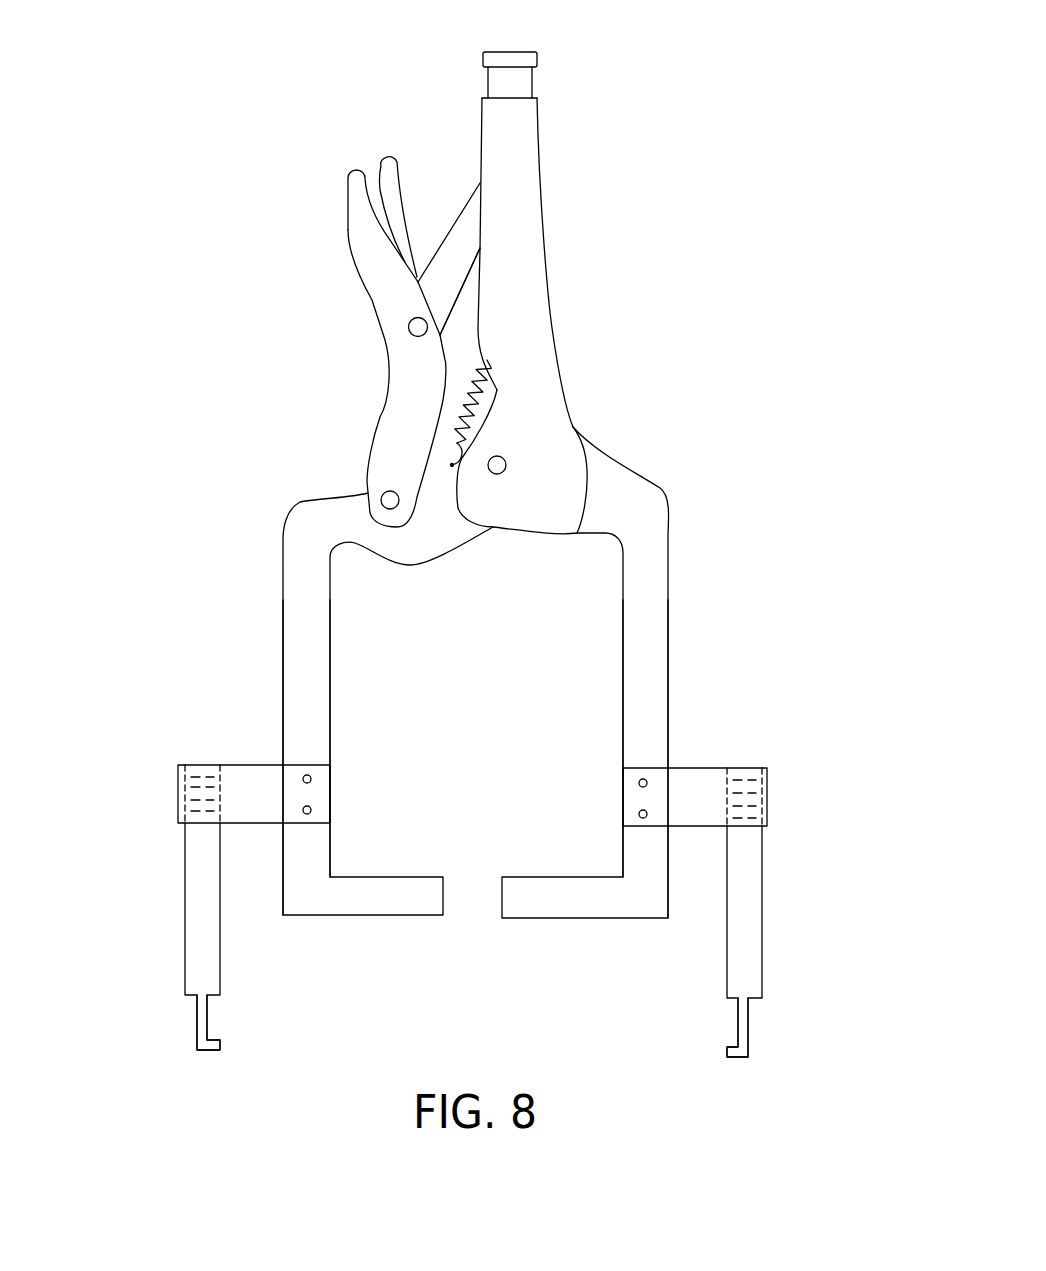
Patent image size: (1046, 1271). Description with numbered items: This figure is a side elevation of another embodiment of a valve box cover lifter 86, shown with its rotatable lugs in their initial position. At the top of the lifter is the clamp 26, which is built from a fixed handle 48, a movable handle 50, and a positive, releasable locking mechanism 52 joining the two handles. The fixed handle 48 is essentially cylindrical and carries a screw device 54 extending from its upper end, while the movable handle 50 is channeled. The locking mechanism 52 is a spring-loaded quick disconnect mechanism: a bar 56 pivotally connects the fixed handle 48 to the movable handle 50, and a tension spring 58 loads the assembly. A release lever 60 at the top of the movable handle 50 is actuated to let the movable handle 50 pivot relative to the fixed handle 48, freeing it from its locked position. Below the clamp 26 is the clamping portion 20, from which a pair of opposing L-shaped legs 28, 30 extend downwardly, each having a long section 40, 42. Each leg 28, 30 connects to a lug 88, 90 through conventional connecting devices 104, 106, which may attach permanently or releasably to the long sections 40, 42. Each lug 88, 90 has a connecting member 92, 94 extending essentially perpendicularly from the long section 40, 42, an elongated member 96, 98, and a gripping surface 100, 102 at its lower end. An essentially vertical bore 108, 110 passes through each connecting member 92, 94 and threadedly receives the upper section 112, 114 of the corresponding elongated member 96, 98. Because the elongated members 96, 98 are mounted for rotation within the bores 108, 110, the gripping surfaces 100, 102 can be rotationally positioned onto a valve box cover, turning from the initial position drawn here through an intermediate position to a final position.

The clamping portion 20 is at (510, 52).
The clamp 26 is at (480, 287).
The L-shaped leg 28 is at (638, 500).
The L-shaped leg 30 is at (303, 508).
The long section 40 is at (637, 667).
The long section 42 is at (317, 693).
The fixed handle 48 is at (512, 152).
The movable handle 50 is at (385, 268).
The releasable locking mechanism 52 is at (470, 192).
The screw device 54 is at (518, 82).
The bar 56 is at (452, 267).
The tension spring 58 is at (493, 390).
The release lever 60 is at (390, 162).
The valve box cover lifter 86 is at (620, 207).
The lug 88 is at (725, 877).
The lug 90 is at (236, 875).
The connecting member 92 is at (703, 768).
The connecting member 94 is at (255, 765).
The elongated member 96 is at (750, 915).
The elongated member 98 is at (198, 905).
The gripping surface 100 is at (748, 1000).
The gripping surface 102 is at (195, 997).
The connecting device 104 is at (639, 783).
The connecting device 106 is at (311, 779).
The vertical bore 108 is at (760, 768).
The vertical bore 110 is at (183, 785).
The upper section 112 is at (743, 768).
The upper section 114 is at (203, 765).